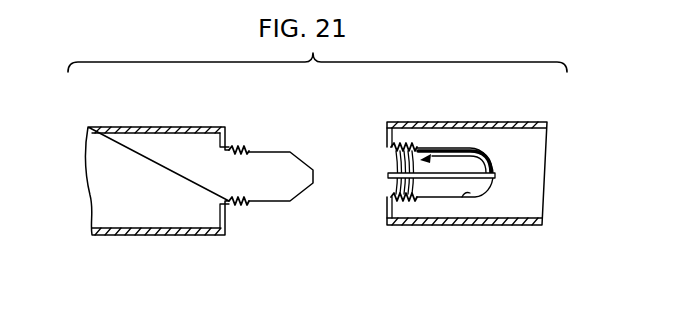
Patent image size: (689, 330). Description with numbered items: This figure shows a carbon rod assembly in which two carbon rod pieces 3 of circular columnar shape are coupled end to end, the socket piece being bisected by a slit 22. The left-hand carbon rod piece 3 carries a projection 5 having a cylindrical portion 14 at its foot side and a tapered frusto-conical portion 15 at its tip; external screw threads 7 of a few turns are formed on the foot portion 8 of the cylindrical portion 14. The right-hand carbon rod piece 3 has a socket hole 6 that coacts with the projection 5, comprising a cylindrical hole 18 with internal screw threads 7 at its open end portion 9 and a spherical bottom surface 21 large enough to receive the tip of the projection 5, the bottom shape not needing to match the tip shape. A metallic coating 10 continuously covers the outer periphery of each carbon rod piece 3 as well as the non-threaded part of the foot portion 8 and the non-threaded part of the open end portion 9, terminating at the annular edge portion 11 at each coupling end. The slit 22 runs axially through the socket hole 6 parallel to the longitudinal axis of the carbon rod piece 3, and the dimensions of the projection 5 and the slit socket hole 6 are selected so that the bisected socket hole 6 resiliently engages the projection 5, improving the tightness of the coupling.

The carbon rod 3 is at (120, 140).
The projection 5 is at (277, 155).
The socket hole 6 is at (437, 150).
The screw threads 7 is at (243, 149).
The foot portion 8 is at (231, 138).
The open end portion 9 is at (390, 193).
The metallic coating 10 is at (178, 236).
The annular edge portion 11 is at (230, 214).
The cylindrical portion 14 is at (270, 204).
The frusto-conical portion 15 is at (298, 199).
The cylindrical hole 18 is at (467, 197).
The spherical bottom surface 21 is at (488, 188).
The slit 22 is at (455, 173).